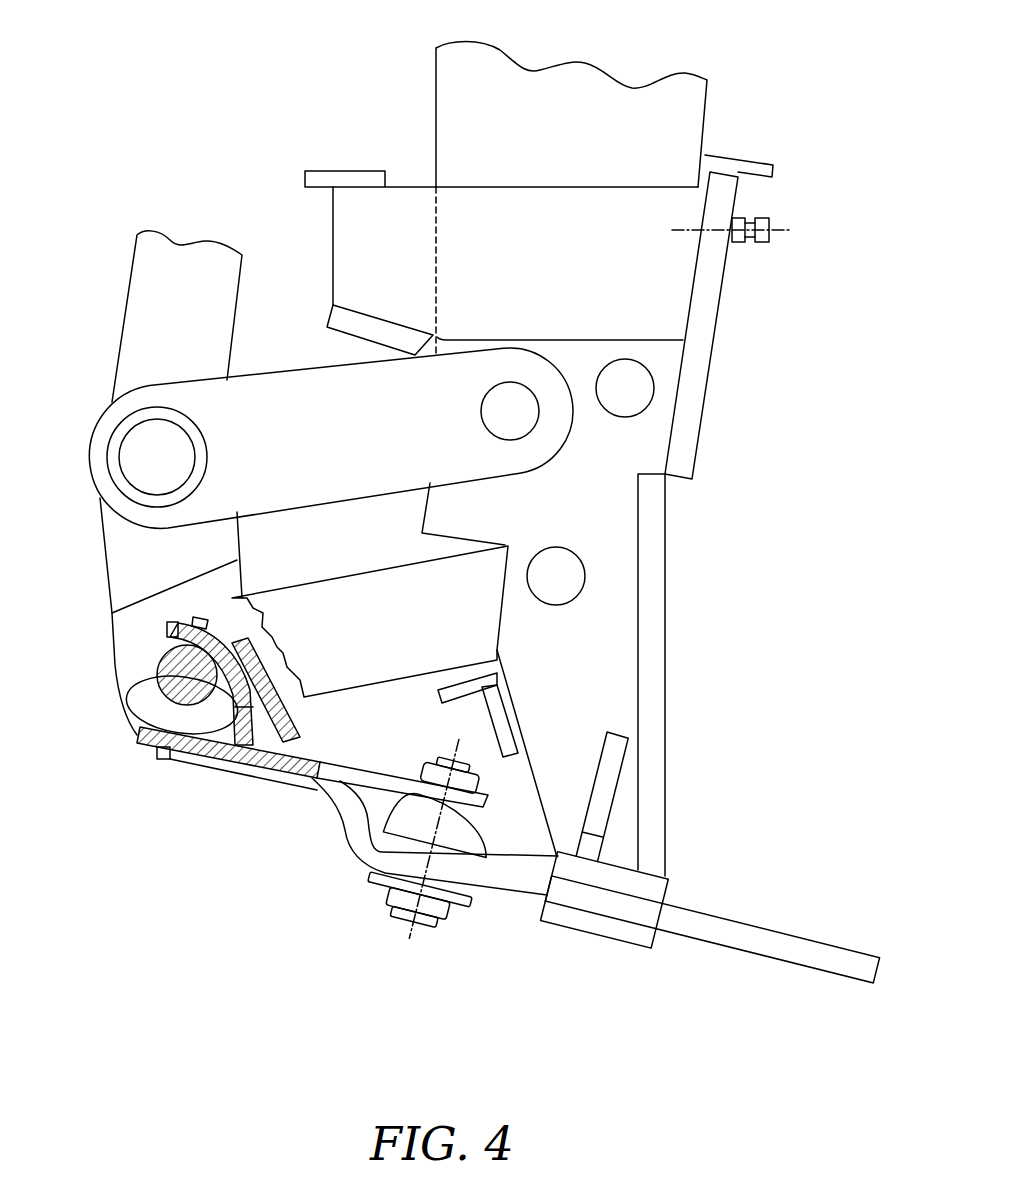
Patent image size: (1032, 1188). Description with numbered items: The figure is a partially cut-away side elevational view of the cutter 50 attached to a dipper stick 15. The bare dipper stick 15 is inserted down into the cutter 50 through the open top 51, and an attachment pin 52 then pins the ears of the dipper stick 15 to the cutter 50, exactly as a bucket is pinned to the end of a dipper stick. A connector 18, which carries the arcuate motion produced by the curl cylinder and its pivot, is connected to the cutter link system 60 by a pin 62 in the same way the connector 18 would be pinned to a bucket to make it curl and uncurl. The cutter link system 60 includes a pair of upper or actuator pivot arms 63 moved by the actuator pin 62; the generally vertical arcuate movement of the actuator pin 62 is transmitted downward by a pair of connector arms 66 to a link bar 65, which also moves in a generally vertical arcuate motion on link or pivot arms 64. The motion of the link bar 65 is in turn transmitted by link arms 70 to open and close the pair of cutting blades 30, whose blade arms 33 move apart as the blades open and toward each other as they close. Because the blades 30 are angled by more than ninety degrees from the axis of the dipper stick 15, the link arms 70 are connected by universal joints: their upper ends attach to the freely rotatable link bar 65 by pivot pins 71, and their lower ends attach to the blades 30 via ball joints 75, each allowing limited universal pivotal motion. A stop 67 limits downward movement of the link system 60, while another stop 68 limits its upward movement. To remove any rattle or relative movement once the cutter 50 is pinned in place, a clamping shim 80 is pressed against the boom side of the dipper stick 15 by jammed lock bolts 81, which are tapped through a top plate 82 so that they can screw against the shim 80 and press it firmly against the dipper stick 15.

The dipper stick 15 is at (627, 102).
The connector 18 is at (138, 268).
The cutting blades 30 is at (757, 921).
The blade arms 33 is at (520, 882).
The cutter 50 is at (258, 97).
The open top 51 is at (410, 186).
The attachment pin 52 is at (635, 394).
The cutter link system 60 is at (176, 681).
The pin (actuator pin) 62 is at (146, 458).
The upper or actuator pivot arms 63 is at (337, 446).
The link or pivot arms 64 is at (378, 633).
The link bar 65 is at (140, 703).
The connector arms 66 is at (218, 542).
The stop 67 is at (440, 694).
The stop 68 is at (348, 326).
The link arms 70 is at (345, 806).
The pivot pins 71 is at (165, 757).
The ball joints 75 is at (462, 820).
The clamping shim 80 is at (745, 160).
The lock bolts 81 is at (782, 232).
The top plate 82 is at (718, 290).